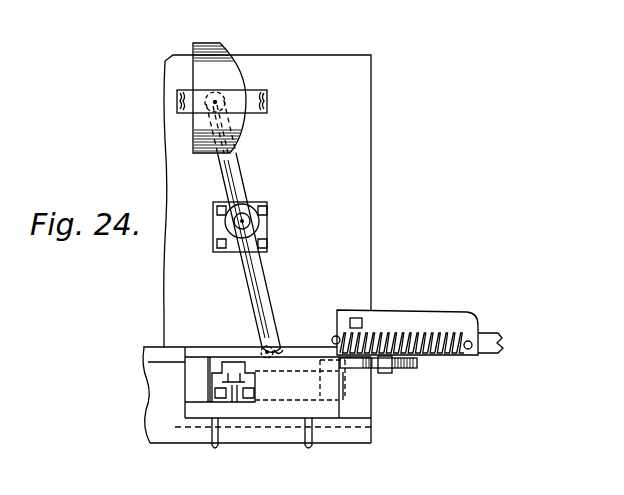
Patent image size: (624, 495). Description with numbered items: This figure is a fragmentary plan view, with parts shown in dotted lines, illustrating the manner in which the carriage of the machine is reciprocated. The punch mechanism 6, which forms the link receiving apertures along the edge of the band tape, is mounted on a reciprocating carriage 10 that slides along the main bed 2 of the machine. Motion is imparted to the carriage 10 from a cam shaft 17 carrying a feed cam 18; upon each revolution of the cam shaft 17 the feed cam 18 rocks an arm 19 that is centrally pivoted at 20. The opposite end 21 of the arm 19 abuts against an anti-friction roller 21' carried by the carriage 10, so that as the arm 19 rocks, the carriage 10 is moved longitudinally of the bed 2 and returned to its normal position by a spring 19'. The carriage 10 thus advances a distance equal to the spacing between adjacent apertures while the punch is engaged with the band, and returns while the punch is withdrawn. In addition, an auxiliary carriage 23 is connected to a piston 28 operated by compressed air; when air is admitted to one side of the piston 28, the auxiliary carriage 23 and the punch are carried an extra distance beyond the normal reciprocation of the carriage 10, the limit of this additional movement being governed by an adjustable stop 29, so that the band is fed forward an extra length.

The bed 2 is at (362, 217).
The punch mechanism 6 is at (228, 364).
The reciprocating carriage 10 is at (201, 350).
The cam shaft 17 is at (252, 95).
The feed cam 18 is at (212, 54).
The arm 19 is at (245, 226).
The spring housing 19' is at (417, 316).
The pivot 20 is at (260, 221).
The end of arm 21 is at (297, 332).
The roller 21' is at (291, 321).
The auxiliary carriage 23 is at (335, 380).
The piston 28 is at (232, 405).
The adjustable stop 29 is at (382, 372).